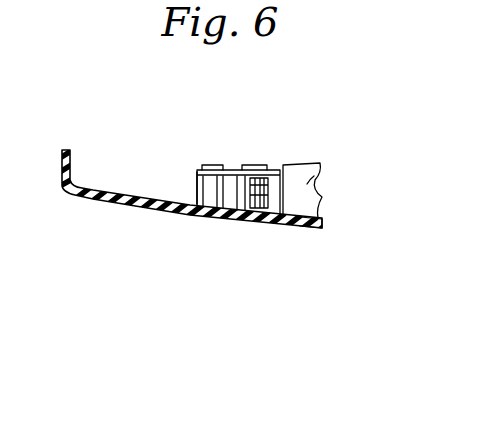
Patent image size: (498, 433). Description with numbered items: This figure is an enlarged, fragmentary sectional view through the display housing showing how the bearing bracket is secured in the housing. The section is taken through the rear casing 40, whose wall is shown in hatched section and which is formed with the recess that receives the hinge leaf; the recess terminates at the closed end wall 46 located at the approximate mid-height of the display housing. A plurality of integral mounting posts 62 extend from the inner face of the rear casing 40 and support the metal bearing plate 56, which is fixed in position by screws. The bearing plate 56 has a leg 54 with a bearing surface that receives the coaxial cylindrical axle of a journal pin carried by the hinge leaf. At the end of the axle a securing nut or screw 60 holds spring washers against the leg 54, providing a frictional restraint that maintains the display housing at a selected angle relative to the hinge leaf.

The rear casing 40 is at (163, 218).
The closed end wall 46 is at (320, 165).
The leg 54 is at (298, 229).
The bearing plate 56 is at (233, 172).
The securing nut or screw 60 is at (240, 208).
The mounting posts 62 is at (197, 175).